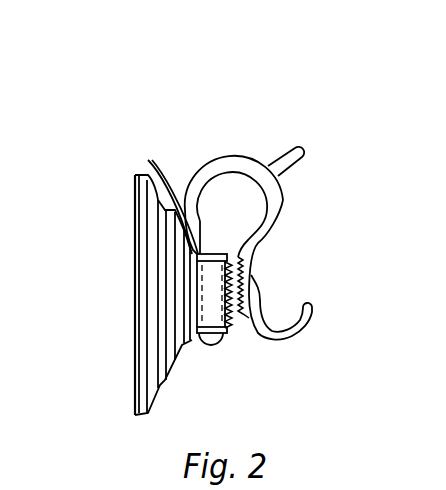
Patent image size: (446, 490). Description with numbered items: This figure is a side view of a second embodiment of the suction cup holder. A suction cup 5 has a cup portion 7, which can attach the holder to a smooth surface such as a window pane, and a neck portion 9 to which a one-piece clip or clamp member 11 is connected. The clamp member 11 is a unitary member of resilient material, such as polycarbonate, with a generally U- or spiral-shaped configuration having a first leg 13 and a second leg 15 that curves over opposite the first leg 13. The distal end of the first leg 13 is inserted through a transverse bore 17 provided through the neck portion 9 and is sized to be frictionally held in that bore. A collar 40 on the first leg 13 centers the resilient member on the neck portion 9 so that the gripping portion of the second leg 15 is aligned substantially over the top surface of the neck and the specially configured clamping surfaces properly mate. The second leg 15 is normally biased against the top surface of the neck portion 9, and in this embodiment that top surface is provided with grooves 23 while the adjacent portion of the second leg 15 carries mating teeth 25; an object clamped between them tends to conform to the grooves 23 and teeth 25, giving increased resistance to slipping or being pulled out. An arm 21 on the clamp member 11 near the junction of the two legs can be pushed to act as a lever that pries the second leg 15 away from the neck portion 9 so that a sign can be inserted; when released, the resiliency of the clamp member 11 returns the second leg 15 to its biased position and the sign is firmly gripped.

The suction cup 5 is at (146, 281).
The cup portion 7 is at (134, 230).
The neck portion 9 is at (200, 341).
The collar 40 is at (148, 160).
The first leg 13 is at (206, 172).
The clamp member 11 is at (275, 175).
The arm 21 is at (303, 150).
The second leg 15 is at (275, 223).
The mating teeth 25 is at (262, 292).
The grooves 23 is at (247, 325).
The transverse bore 17 is at (215, 312).